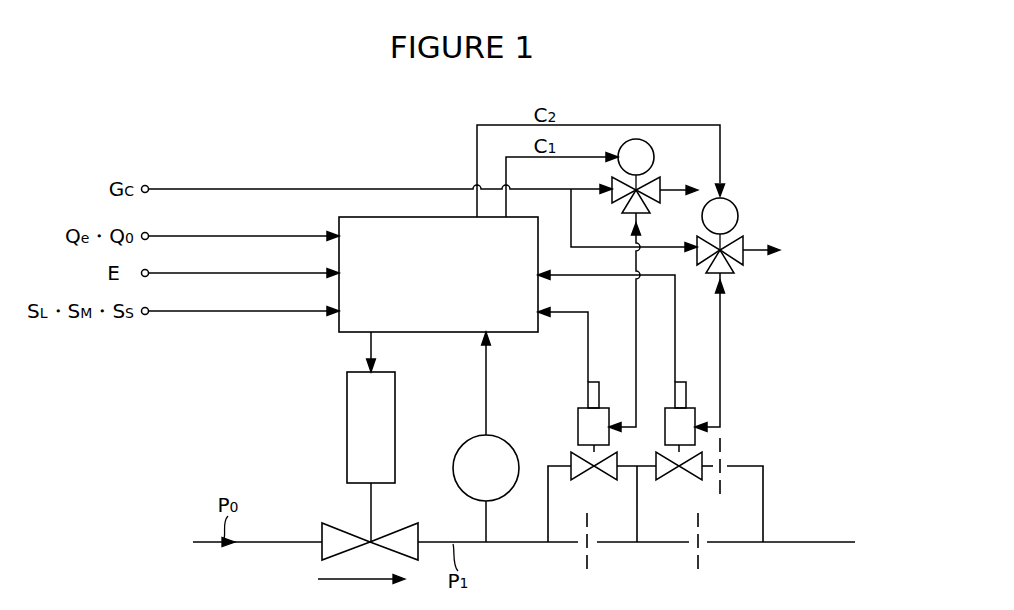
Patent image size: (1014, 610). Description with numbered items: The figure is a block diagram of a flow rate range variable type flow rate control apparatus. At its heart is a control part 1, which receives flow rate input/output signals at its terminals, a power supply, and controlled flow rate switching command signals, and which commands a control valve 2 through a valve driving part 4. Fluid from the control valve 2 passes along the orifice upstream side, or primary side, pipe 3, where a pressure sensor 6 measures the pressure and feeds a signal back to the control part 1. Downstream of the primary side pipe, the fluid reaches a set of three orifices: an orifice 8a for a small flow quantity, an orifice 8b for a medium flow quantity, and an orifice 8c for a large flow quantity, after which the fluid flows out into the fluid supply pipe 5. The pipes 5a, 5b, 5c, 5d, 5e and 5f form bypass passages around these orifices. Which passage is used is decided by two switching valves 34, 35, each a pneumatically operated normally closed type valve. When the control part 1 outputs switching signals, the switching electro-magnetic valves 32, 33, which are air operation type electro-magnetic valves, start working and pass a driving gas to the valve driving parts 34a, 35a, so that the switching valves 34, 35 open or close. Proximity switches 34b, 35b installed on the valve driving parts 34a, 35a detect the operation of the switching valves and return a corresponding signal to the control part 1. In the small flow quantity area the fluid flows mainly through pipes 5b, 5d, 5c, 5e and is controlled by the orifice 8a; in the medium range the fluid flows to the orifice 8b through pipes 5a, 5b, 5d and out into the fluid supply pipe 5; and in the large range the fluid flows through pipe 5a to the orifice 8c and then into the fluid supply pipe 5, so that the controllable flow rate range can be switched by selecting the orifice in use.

The control part 1 is at (345, 333).
The control valve 2 is at (322, 528).
The orifice upstream side (primary side) pipe 3 is at (516, 544).
The valve driving part 4 is at (347, 435).
The fluid supply pipe 5 is at (826, 541).
The pipe 5a is at (548, 514).
The pipe 5b is at (637, 520).
The pipe 5c is at (763, 520).
The pipe 5d is at (662, 544).
The pipe 5e is at (637, 466).
The pipe 5f is at (726, 544).
The pressure sensor 6 is at (453, 466).
The orifice for small flow quantity 8a is at (590, 548).
The orifice for medium flow quantity 8b is at (700, 540).
The orifice for large flow quantity 8c is at (723, 459).
The switching electro-magnetic valve 32 is at (653, 148).
The switching electro-magnetic valve 33 is at (737, 211).
The switching valve 34 is at (588, 471).
The valve driving part 34a is at (593, 425).
The proximity switch 34b is at (593, 393).
The switching valve 35 is at (674, 471).
The valve driving part 35a is at (684, 418).
The proximity switch 35b is at (684, 392).